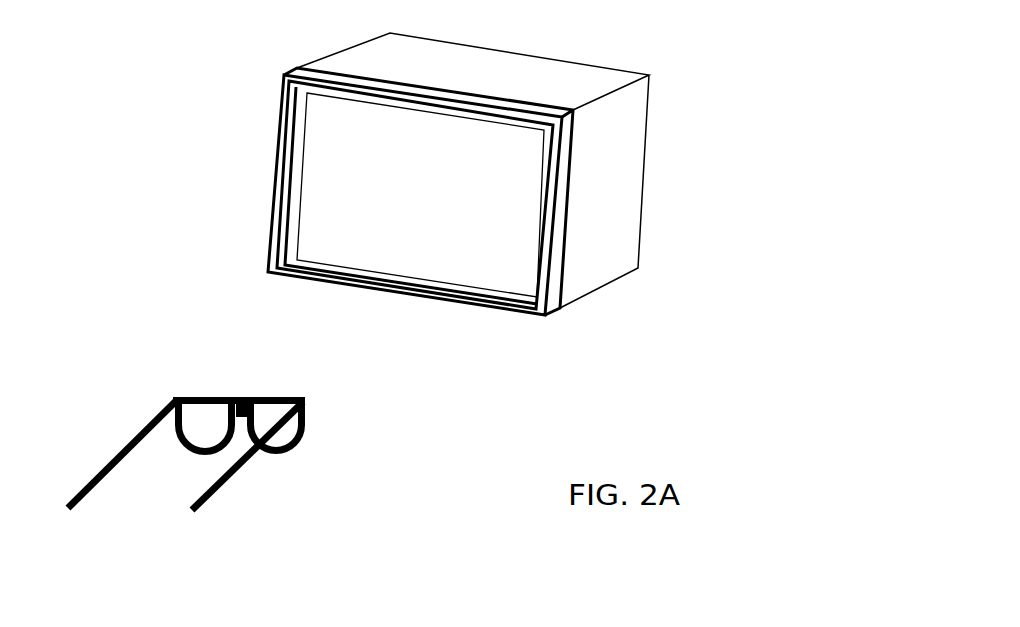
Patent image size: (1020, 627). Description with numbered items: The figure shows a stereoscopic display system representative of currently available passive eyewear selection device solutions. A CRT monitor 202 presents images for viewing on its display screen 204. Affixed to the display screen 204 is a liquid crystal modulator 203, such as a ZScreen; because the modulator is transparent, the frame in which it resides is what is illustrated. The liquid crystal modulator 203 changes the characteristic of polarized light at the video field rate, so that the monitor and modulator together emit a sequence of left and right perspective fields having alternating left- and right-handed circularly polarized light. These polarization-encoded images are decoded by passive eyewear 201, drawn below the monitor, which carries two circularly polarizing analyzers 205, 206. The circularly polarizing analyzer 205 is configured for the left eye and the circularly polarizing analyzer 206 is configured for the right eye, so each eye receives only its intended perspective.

The passive eyewear 201 is at (186, 452).
The CRT monitor 202 is at (642, 227).
The liquid crystal modulator 203 is at (497, 313).
The display screen 204 is at (433, 218).
The circularly polarizing analyzer 205 is at (202, 423).
The circularly polarizing analyzer 206 is at (270, 418).